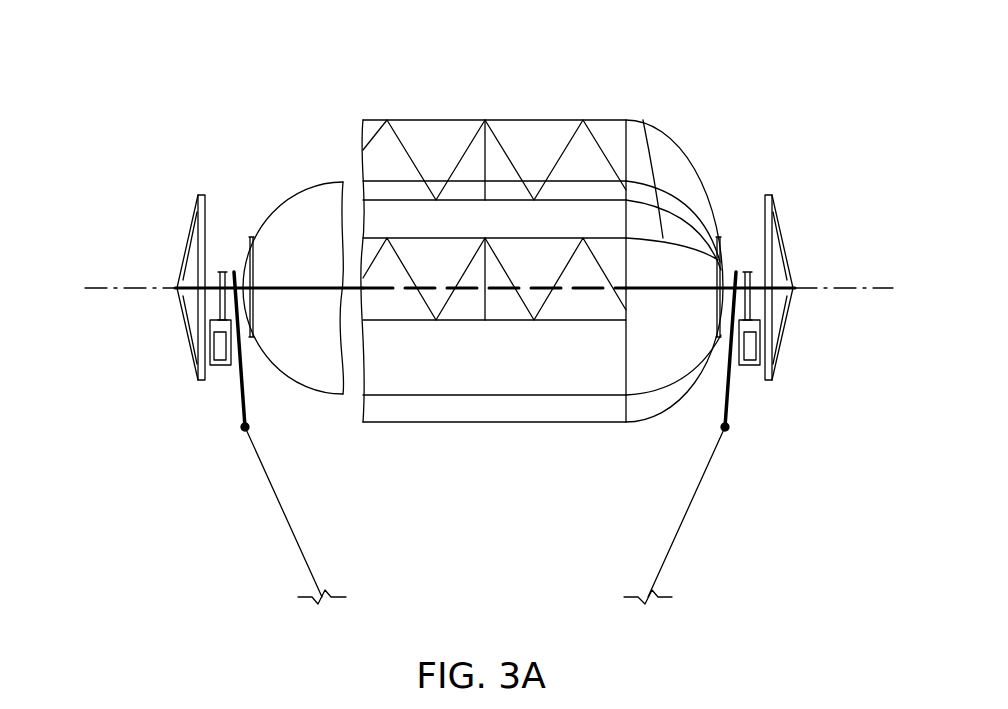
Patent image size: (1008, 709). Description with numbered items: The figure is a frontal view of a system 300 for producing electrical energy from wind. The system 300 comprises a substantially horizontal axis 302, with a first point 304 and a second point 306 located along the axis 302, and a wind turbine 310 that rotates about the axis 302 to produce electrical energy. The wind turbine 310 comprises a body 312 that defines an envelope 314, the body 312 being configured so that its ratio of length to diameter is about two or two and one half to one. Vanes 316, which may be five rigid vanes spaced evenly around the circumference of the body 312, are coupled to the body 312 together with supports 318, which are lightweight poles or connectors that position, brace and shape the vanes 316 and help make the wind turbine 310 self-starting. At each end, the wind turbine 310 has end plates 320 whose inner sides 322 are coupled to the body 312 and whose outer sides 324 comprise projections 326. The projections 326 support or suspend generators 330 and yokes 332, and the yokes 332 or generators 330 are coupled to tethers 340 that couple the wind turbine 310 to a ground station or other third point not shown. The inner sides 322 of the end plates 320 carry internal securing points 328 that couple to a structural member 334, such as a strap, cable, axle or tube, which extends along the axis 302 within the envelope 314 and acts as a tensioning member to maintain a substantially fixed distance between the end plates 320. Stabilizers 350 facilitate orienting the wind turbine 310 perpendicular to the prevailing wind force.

The system 300 is at (126, 41).
The substantially horizontal axis 302 is at (149, 286).
The first point 304 is at (242, 250).
The second point 306 is at (728, 250).
The wind turbine 310 is at (497, 472).
The body 312 is at (325, 396).
The envelope 314 is at (321, 368).
The vanes 316 is at (653, 150).
The supports 318 is at (560, 151).
The end plates 320 is at (228, 266).
The inner sides 322 is at (267, 273).
The outer sides 324 is at (242, 397).
The projections 326 is at (181, 257).
The internal securing points 328 is at (252, 291).
The generators 330 is at (218, 372).
The yokes 332 is at (238, 412).
The structural member 334 is at (302, 283).
The tethers 340 is at (287, 523).
The stabilizers 350 is at (197, 340).